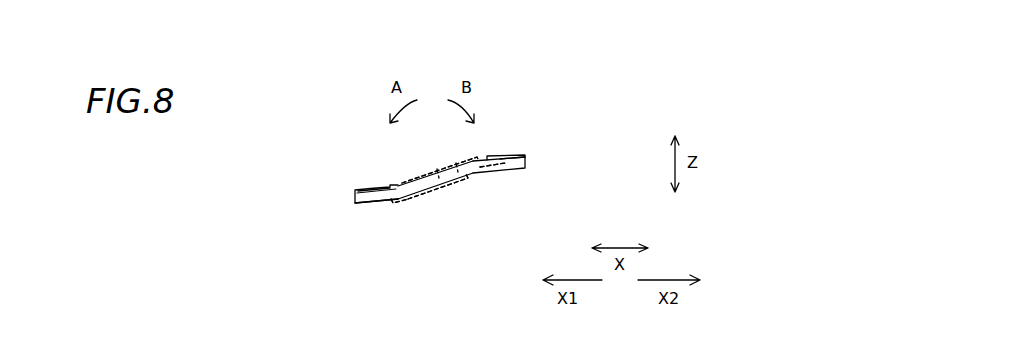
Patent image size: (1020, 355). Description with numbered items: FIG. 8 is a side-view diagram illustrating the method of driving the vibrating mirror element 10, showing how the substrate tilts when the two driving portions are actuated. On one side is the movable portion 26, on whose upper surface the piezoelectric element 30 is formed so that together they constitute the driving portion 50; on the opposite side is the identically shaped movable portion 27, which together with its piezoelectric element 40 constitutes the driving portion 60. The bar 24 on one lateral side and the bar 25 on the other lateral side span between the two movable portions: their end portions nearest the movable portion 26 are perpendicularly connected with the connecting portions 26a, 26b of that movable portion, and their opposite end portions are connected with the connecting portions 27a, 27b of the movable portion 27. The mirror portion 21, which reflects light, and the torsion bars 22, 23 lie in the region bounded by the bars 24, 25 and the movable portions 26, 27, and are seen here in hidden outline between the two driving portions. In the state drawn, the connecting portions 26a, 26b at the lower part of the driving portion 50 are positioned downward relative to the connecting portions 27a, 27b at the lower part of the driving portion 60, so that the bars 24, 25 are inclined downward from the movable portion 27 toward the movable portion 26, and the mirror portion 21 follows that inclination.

The vibrating mirror element 10 is at (619, 124).
The mirror portion 21 is at (477, 181).
The torsion bar 22 is at (438, 173).
The torsion bar 23 is at (440, 170).
The bar 24 is at (457, 188).
The bar 25 is at (438, 186).
The movable portion 26 is at (352, 198).
The connecting portion 26a is at (398, 203).
The connecting portion 26b is at (399, 201).
The movable portion 27 is at (528, 162).
The connecting portion 27a is at (496, 180).
The connecting portion 27b is at (492, 165).
The piezoelectric element 30 is at (367, 188).
The piezoelectric element 40 is at (511, 155).
The driving portion 50 is at (354, 217).
The driving portion 60 is at (529, 149).